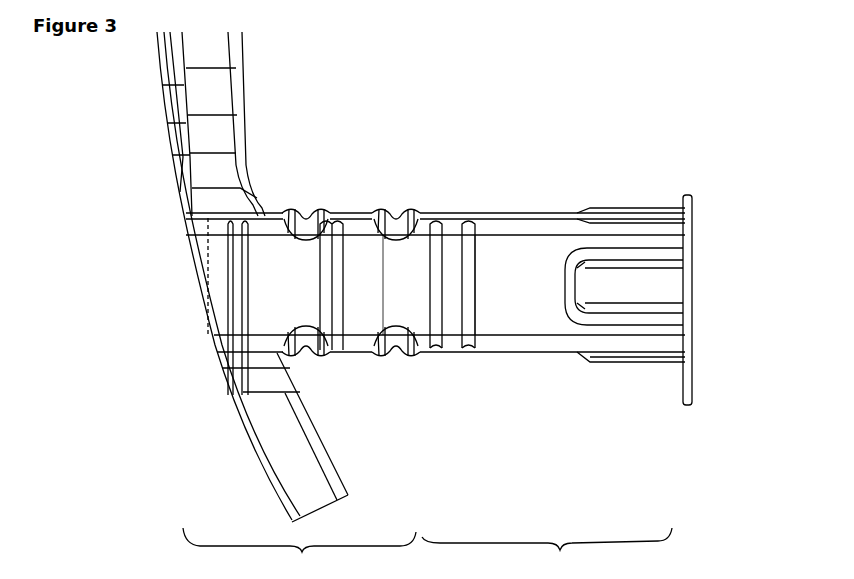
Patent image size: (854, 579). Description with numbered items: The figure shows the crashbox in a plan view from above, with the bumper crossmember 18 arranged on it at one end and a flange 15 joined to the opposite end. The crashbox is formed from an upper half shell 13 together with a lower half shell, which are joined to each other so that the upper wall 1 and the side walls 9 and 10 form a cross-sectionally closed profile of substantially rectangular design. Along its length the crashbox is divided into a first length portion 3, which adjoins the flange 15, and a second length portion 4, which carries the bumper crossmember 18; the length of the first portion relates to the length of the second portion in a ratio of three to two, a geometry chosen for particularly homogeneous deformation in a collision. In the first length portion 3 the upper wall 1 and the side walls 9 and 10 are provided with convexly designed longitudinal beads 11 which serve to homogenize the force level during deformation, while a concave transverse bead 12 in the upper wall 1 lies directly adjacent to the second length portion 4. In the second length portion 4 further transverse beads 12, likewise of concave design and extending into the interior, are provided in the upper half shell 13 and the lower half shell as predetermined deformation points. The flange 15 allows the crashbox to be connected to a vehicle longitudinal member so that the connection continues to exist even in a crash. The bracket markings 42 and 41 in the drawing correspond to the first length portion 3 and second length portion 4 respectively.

The upper wall 1 is at (270, 308).
The first length portion 3 is at (547, 553).
The second length portion 4 is at (299, 553).
The side wall 9 is at (270, 345).
The side wall 10 is at (243, 218).
The longitudinal bead 11 is at (613, 210).
The transverse bead 12 is at (318, 212).
The upper half shell 13 is at (538, 318).
The flange 15 is at (692, 240).
The bumper crossmember 18 is at (259, 98).
The second region 41 is at (547, 553).
The first region 42 is at (299, 553).